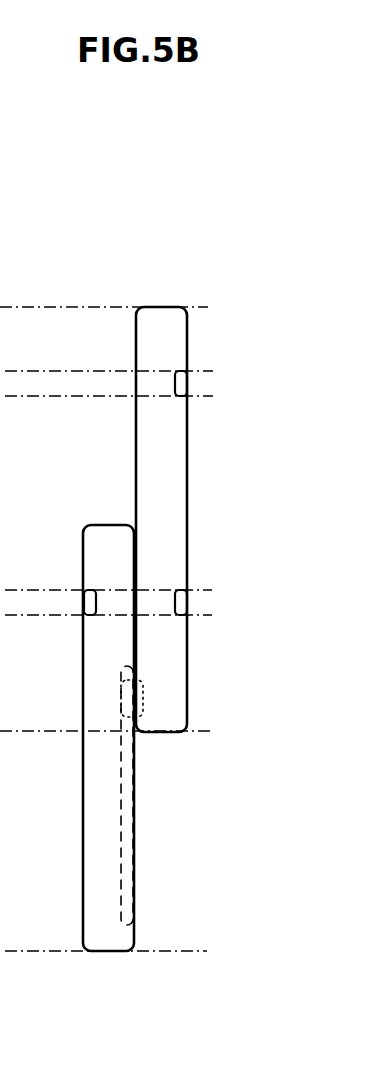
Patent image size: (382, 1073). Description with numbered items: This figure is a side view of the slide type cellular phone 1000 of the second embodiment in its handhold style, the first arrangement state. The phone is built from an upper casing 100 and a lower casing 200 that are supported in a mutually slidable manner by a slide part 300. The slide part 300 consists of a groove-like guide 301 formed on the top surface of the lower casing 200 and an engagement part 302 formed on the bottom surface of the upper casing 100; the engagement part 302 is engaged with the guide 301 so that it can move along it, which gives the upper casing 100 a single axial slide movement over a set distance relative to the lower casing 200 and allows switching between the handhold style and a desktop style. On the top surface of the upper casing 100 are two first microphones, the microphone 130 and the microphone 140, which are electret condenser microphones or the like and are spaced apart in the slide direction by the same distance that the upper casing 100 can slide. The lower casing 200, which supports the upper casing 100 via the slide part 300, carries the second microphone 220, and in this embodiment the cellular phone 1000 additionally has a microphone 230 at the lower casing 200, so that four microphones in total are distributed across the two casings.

The cellular phone 1000 is at (132, 217).
The upper casing 100 is at (162, 322).
The lower casing 200 is at (107, 926).
The microphone 130 is at (180, 385).
The microphone 140 is at (180, 603).
The microphone 220 is at (88, 604).
The microphone 230 is at (78, 608).
The slide part 300 is at (201, 757).
The guide 301 is at (122, 838).
The engagement part 302 is at (141, 712).